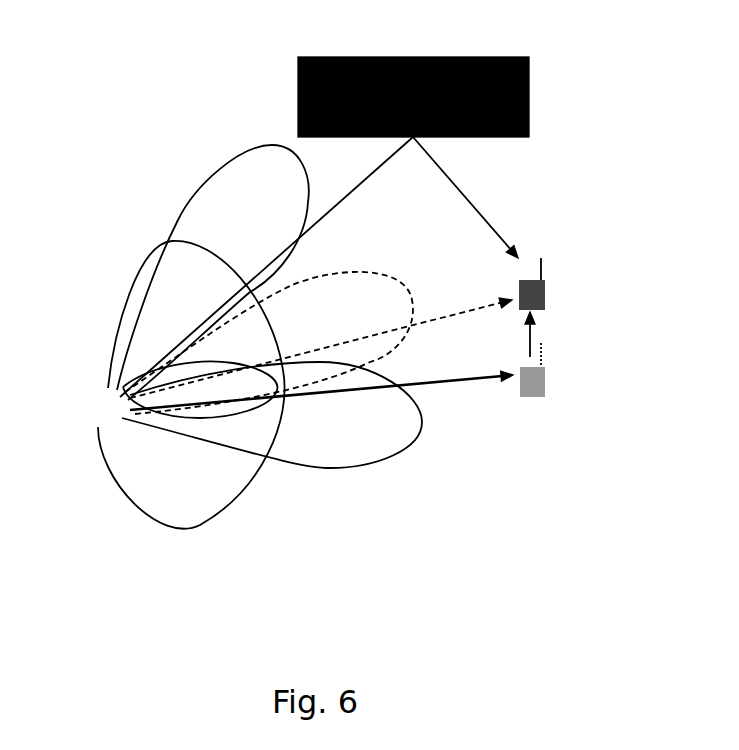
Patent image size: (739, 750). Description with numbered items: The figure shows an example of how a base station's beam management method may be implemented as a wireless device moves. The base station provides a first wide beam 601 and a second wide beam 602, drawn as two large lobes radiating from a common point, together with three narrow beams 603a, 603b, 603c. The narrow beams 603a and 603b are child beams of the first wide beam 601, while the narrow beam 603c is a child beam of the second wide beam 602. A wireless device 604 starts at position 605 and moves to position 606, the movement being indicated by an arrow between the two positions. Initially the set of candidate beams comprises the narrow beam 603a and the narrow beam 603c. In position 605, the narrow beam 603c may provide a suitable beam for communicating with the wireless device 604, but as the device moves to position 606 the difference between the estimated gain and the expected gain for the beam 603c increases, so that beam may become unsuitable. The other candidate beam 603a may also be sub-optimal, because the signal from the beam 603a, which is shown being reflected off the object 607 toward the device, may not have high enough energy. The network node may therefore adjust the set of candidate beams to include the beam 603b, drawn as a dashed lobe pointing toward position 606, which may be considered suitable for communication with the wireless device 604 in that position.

The first wide beam 601 is at (128, 317).
The second wide beam 602 is at (223, 518).
The narrow beam 603a is at (245, 155).
The narrow beam 603b is at (387, 278).
The narrow beam 603c is at (422, 423).
The wireless device 604 is at (542, 283).
The position 605 is at (543, 393).
The position 606 is at (530, 318).
The object 607 is at (360, 56).